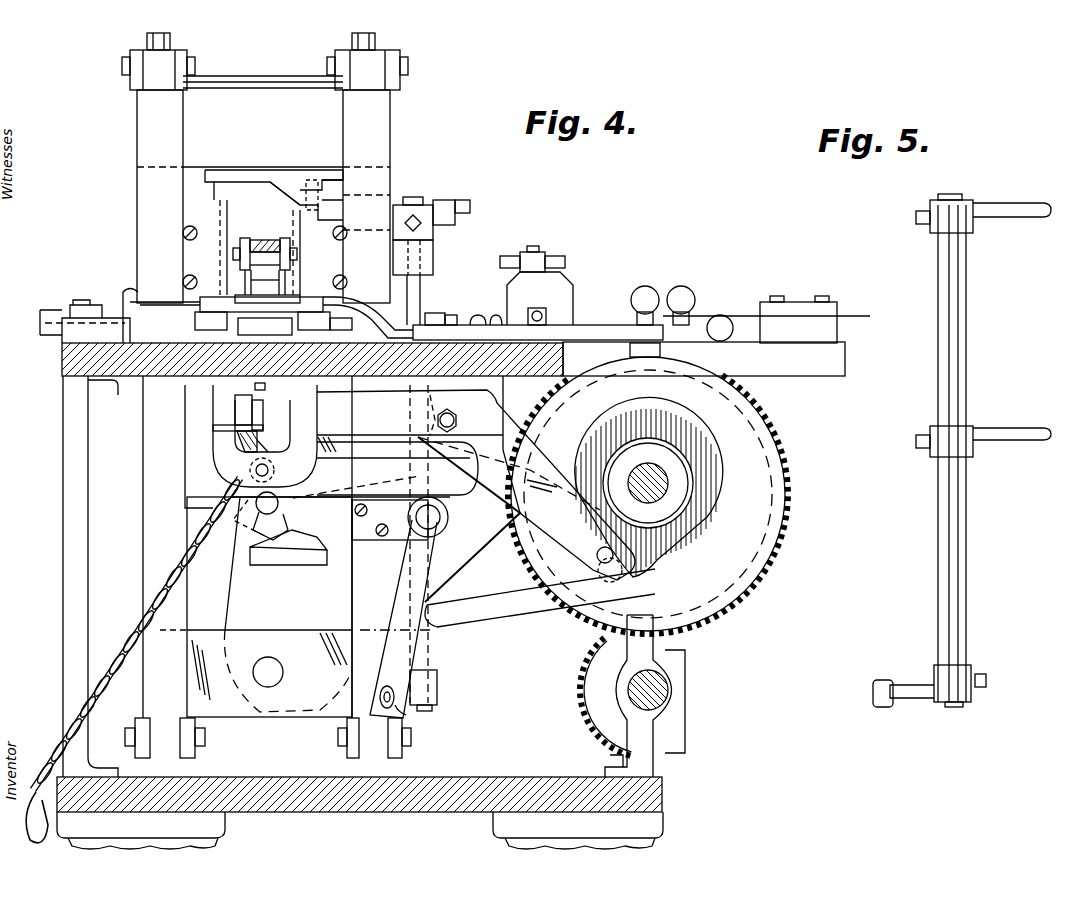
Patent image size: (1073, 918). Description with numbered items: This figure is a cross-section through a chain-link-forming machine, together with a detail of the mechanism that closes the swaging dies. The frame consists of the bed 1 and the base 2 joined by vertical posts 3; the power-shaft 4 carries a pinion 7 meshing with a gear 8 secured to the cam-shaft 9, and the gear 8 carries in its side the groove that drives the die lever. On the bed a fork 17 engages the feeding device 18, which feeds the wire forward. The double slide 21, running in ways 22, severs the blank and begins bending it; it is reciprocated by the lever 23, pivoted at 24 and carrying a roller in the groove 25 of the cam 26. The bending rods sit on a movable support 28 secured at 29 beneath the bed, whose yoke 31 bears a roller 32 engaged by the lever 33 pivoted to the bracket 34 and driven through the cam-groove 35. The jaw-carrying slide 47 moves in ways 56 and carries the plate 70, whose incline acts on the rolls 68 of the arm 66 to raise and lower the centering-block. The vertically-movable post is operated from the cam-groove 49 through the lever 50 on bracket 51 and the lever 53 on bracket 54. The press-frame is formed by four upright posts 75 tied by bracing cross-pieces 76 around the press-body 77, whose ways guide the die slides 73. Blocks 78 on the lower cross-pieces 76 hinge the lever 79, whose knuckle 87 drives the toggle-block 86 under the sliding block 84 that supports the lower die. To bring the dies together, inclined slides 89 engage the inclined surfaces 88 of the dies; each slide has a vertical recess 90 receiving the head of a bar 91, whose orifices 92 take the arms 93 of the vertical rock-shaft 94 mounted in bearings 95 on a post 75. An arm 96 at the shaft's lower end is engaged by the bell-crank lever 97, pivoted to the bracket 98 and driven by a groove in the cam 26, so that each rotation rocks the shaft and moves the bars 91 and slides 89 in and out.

In FIG. 4, the bed 1 is at (148, 377).
In FIG. 4, the base 2 is at (478, 777).
In FIG. 4, the vertical posts 3 is at (654, 690).
In FIG. 4, the power-shaft 4 is at (672, 690).
In FIG. 4, the pinion 7 is at (688, 700).
In FIG. 4, the gear 8 is at (648, 495).
In FIG. 4, the cam-shaft 9 is at (662, 483).
In FIG. 4, the fork 17 is at (548, 256).
In FIG. 4, the feeding device 18 is at (563, 273).
In FIG. 4, the double slide 21 is at (262, 314).
In FIG. 4, the ways 22 is at (195, 312).
In FIG. 4, the lever 23 is at (580, 325).
In FIG. 4, the pivot 24 is at (460, 313).
In FIG. 4, the groove 25 is at (705, 372).
In FIG. 4, the cam 26 is at (770, 583).
In FIG. 4, the movable support 28 is at (240, 392).
In FIG. 4, the securing point 29 is at (268, 398).
In FIG. 4, the yoke 31 is at (251, 446).
In FIG. 4, the roller 32 is at (276, 470).
In FIG. 4, the lever 33 is at (397, 468).
In FIG. 4, the bracket 34 is at (504, 519).
In FIG. 4, the cam-groove 35 is at (358, 500).
In FIG. 4, the slide 47 is at (265, 327).
In FIG. 4, the cam-groove 49 is at (662, 487).
In FIG. 4, the lever 50 is at (250, 428).
In FIG. 4, the bracket 51 is at (250, 455).
In FIG. 4, the lever 53 is at (476, 479).
In FIG. 4, the bracket 54 is at (459, 404).
In FIG. 4, the ways 56 is at (342, 331).
In FIG. 4, the arm 66 is at (284, 200).
In FIG. 4, the rolls 68 is at (272, 240).
In FIG. 4, the plate 70 is at (268, 283).
In FIG. 4, the slides 73 is at (260, 243).
In FIG. 4, the upright posts 75 is at (263, 196).
In FIG. 4, the bracing cross-pieces 76 is at (385, 740).
In FIG. 4, the press-body 77 is at (263, 121).
In FIG. 4, the blocks 78 is at (256, 671).
In FIG. 4, the lever 79 is at (318, 607).
In FIG. 4, the sliding block 84 is at (259, 512).
In FIG. 4, the toggle-block 86 is at (253, 530).
In FIG. 4, the knuckle 87 is at (288, 547).
In FIG. 4, the inclined surfaces 88 is at (268, 183).
In FIG. 4, the inclined slides 89 is at (310, 190).
In FIG. 4, the vertical recess 90 is at (330, 185).
In FIG. 4, the bars 91 is at (398, 205).
In FIG. 4, the orifices 92 is at (442, 205).
In FIG. 4, the arms 93 is at (470, 207).
In FIG. 5, the arms 93 is at (1000, 203).
In FIG. 4, the vertical rock-shaft 94 is at (415, 305).
In FIG. 5, the vertical rock-shaft 94 is at (966, 372).
In FIG. 4, the bearings 95 is at (420, 262).
In FIG. 4, the arm 96 is at (410, 712).
In FIG. 5, the arm 96 is at (912, 685).
In FIG. 4, the bell-crank lever 97 is at (540, 598).
In FIG. 4, the bracket 98 is at (400, 535).